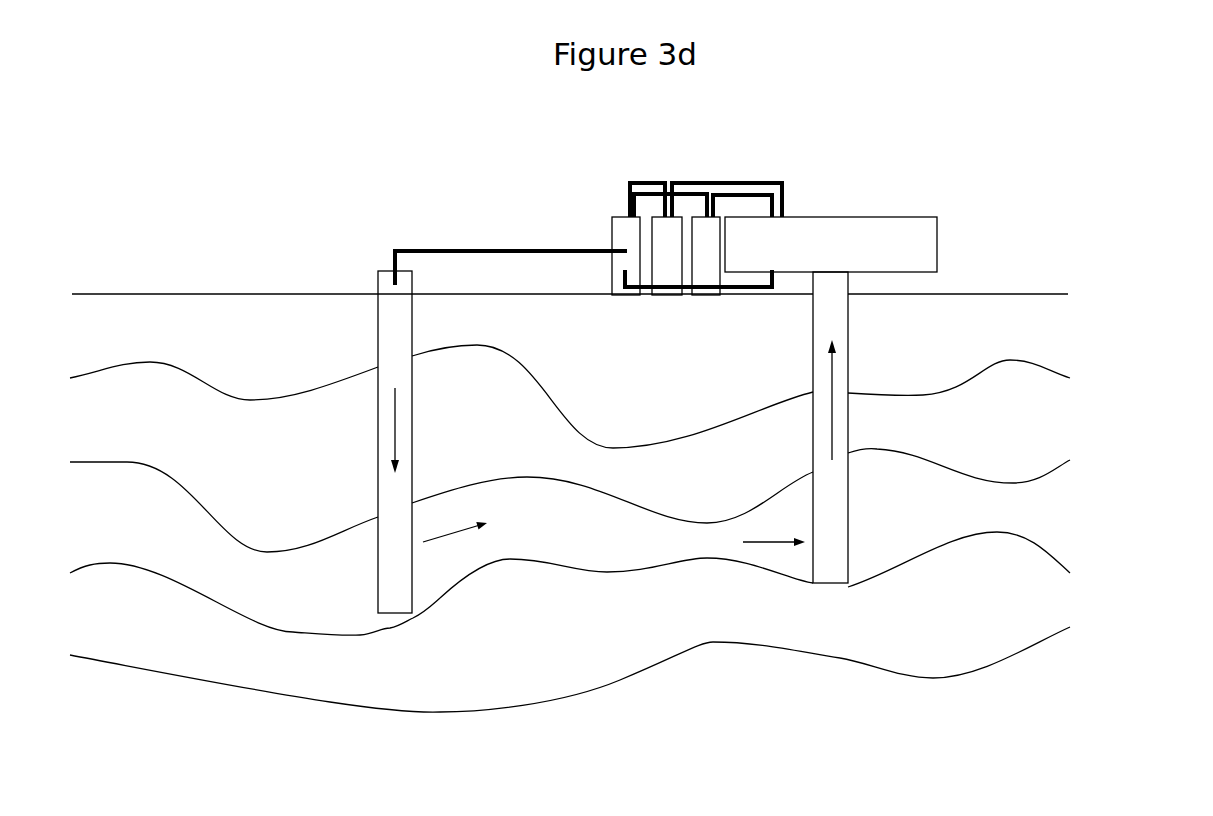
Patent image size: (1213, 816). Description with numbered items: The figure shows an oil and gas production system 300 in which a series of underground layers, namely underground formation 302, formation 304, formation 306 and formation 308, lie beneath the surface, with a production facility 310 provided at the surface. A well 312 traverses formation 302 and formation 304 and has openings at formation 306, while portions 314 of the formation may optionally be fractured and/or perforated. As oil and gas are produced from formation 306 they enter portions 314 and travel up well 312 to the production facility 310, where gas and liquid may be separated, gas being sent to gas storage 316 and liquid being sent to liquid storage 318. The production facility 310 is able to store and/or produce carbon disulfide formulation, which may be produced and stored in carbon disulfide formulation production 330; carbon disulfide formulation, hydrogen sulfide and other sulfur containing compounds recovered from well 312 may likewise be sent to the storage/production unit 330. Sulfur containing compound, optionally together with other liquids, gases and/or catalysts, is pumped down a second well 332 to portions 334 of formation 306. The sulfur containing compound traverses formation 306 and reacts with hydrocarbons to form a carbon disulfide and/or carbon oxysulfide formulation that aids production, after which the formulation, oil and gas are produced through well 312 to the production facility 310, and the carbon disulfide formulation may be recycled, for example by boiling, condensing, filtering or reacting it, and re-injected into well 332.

The system 300 is at (395, 168).
The underground formation 302 is at (570, 371).
The formation 304 is at (570, 479).
The formation 306 is at (959, 534).
The formation 308 is at (570, 640).
The production facility 310 is at (850, 255).
The well 312 is at (848, 323).
The portions of formation 314 is at (788, 558).
The gas storage 316 is at (705, 238).
The liquid storage 318 is at (670, 240).
The carbon disulfide formulation production 330 is at (623, 232).
The well 332 is at (395, 330).
The portions of formation 334 is at (432, 570).